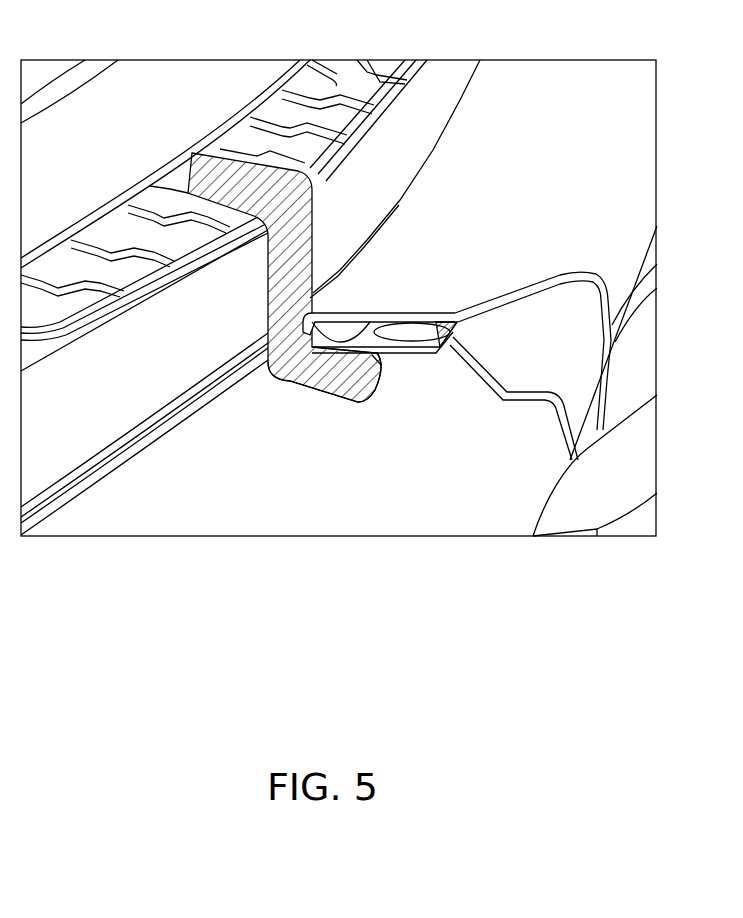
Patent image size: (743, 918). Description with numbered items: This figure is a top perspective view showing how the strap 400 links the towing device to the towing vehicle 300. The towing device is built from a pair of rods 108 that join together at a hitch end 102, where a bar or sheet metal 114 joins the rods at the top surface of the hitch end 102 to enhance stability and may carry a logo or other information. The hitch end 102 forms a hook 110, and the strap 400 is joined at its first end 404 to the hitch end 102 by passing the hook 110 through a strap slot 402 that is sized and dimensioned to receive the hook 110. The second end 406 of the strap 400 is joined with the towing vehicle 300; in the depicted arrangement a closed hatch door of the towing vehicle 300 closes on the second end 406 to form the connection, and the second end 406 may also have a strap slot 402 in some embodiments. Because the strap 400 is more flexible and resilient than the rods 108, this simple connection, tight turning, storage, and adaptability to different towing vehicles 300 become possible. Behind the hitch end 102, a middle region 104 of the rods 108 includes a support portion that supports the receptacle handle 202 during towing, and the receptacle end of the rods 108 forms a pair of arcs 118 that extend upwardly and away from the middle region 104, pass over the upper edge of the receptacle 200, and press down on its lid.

The hitch end 102 is at (357, 316).
The middle region 104 is at (601, 254).
The rods 108 is at (550, 279).
The hook 110 is at (283, 393).
The sheet metal 114 is at (412, 323).
The pair of arcs 118 is at (614, 350).
The receptacle 200 is at (606, 489).
The receptacle handle 202 is at (584, 443).
The towing vehicle 300 is at (443, 86).
The strap 400 is at (314, 222).
The strap slot 402 is at (327, 393).
The first end 404 is at (380, 383).
The second end 406 is at (194, 152).